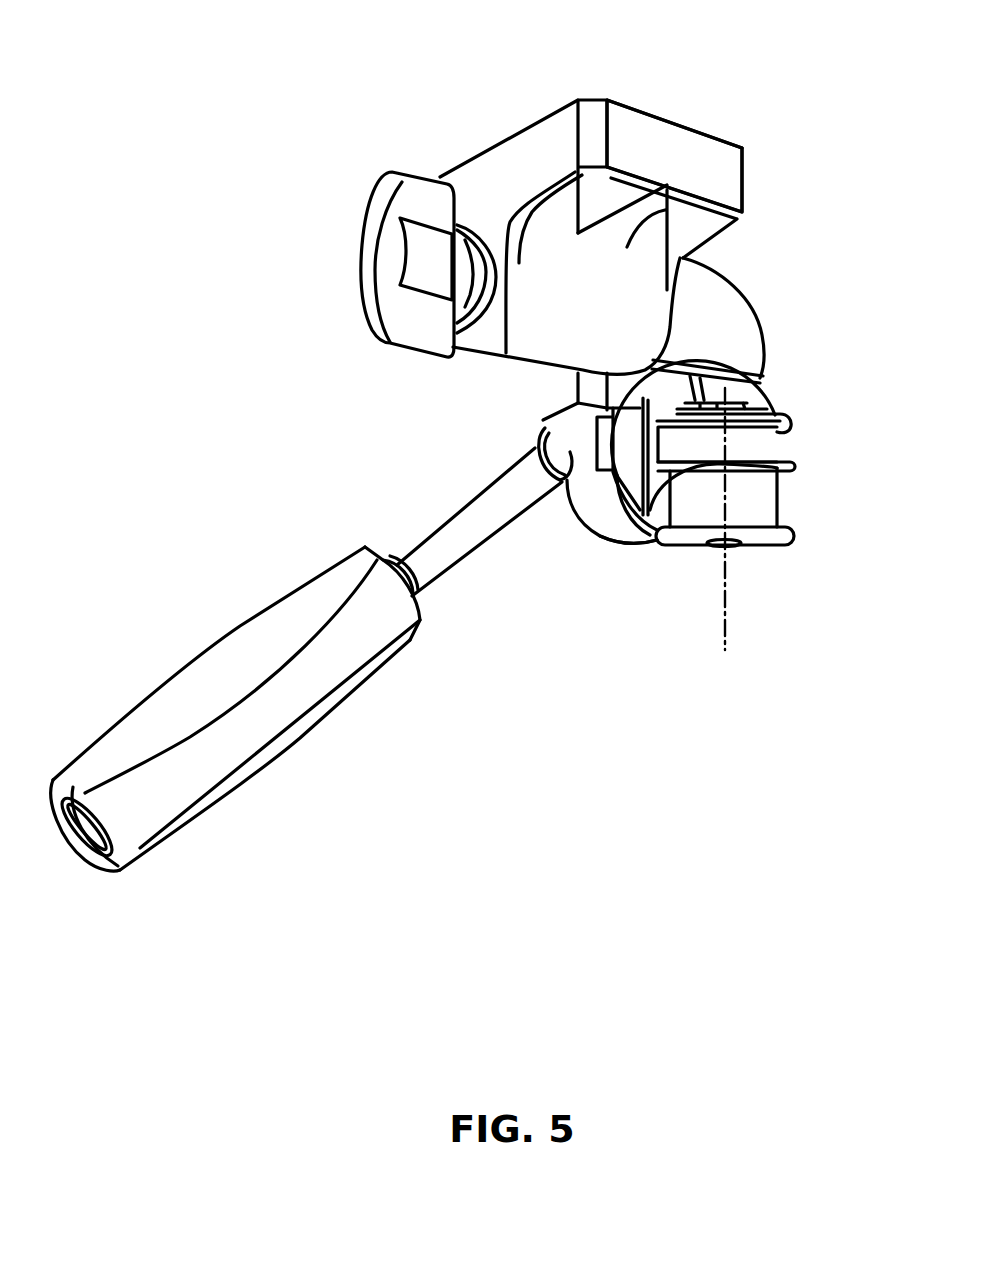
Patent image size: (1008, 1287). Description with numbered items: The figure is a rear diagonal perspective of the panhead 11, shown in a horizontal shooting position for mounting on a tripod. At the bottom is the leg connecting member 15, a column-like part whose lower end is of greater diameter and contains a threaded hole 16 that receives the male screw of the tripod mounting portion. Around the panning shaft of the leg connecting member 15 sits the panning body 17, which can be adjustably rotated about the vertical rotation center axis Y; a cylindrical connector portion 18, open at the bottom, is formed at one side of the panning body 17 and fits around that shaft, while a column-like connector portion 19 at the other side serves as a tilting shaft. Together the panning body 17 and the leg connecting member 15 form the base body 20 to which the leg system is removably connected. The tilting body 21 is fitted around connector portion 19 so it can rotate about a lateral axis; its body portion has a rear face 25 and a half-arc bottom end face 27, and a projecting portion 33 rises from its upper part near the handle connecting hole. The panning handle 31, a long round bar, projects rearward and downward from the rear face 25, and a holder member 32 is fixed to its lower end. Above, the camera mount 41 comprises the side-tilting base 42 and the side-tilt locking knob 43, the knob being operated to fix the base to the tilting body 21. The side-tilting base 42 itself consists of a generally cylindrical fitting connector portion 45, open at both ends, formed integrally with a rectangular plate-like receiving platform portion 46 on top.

The panhead 11 is at (738, 101).
The camera mount 41 is at (475, 148).
The side-tilting base 42 is at (640, 128).
The side-tilt locking knob 43 is at (383, 267).
The fitting connector portion 45 is at (503, 340).
The receiving platform portion 46 is at (540, 143).
The projecting portion 33 is at (710, 290).
The leg connecting member 15 is at (770, 523).
The threaded hole 16 is at (730, 550).
The panning body 17 is at (783, 430).
The connector portion 18 is at (763, 446).
The connector portion 19 is at (630, 475).
The base body 20 is at (788, 526).
The tilting body 21 is at (578, 520).
The rear face 25 is at (580, 490).
The bottom end face 27 is at (633, 547).
The panning handle 31 is at (453, 558).
The holder member 32 is at (180, 787).
The rotation center axis Y is at (725, 633).